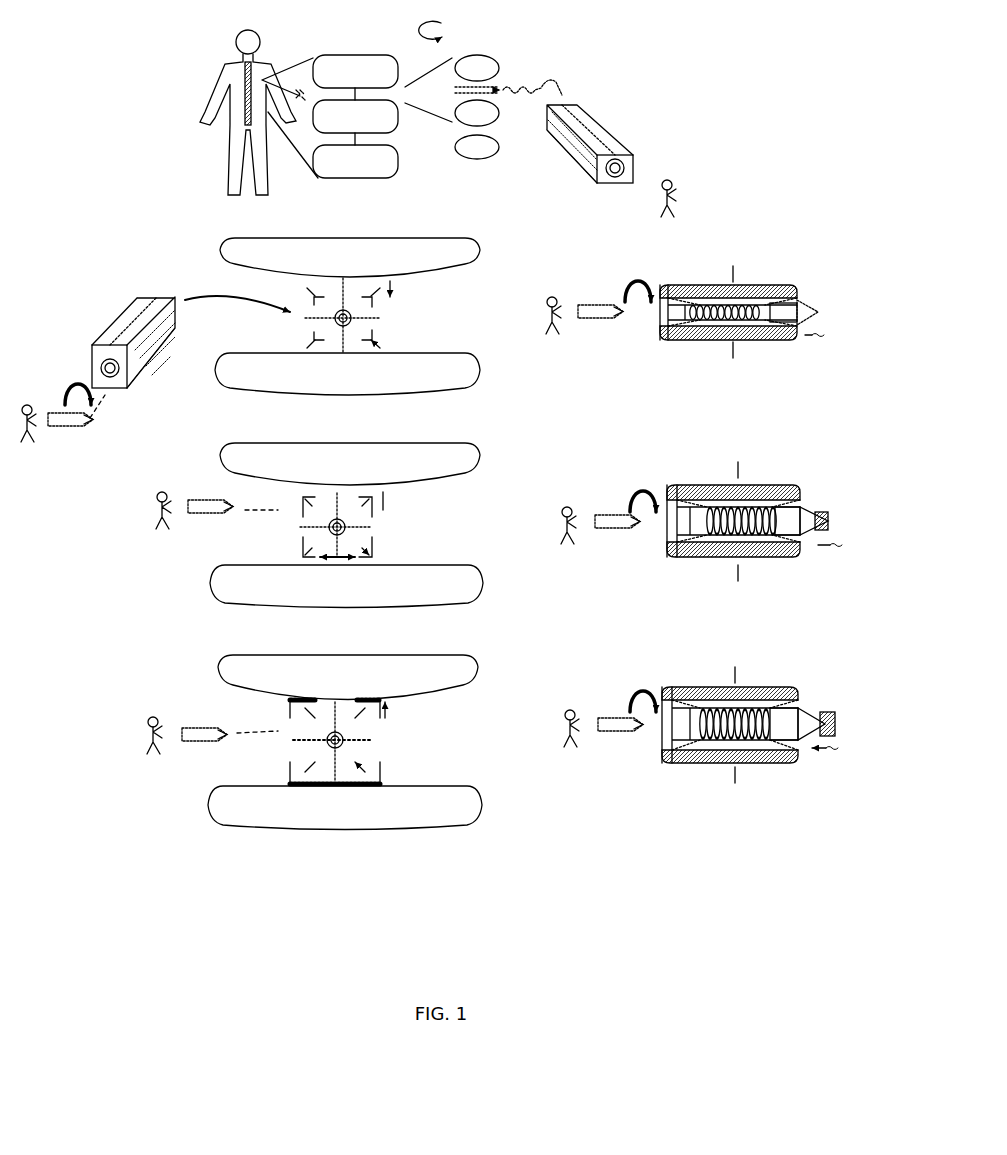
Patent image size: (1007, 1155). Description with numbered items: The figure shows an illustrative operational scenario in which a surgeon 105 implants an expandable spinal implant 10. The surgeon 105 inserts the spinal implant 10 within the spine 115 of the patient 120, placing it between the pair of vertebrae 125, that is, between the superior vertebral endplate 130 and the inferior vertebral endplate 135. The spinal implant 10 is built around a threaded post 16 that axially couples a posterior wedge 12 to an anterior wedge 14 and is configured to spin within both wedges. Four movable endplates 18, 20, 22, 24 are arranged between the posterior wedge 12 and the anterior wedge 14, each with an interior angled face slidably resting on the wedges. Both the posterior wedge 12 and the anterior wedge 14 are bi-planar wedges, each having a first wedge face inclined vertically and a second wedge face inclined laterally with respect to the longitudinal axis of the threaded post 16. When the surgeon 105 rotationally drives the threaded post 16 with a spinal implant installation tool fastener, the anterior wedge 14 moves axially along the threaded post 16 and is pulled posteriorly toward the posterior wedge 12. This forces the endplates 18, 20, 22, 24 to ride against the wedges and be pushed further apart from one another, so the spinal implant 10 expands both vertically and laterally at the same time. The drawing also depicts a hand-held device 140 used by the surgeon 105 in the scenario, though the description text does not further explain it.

The spinal implant 10 is at (504, 80).
The posterior wedge 12 is at (606, 184).
The anterior wedge 14 is at (800, 305).
The threaded post 16 is at (626, 168).
The movable endplate 18 is at (565, 104).
The movable endplate 20 is at (598, 130).
The movable endplate 22 is at (150, 365).
The movable endplate 24 is at (586, 167).
The surgeon 105 is at (676, 197).
The spine 115 is at (225, 74).
The patient 120 is at (256, 30).
The pair of vertebrae 125 is at (300, 97).
The superior vertebral endplate 130 is at (316, 690).
The inferior vertebral endplate 135 is at (316, 816).
The remote control 140 is at (66, 430).